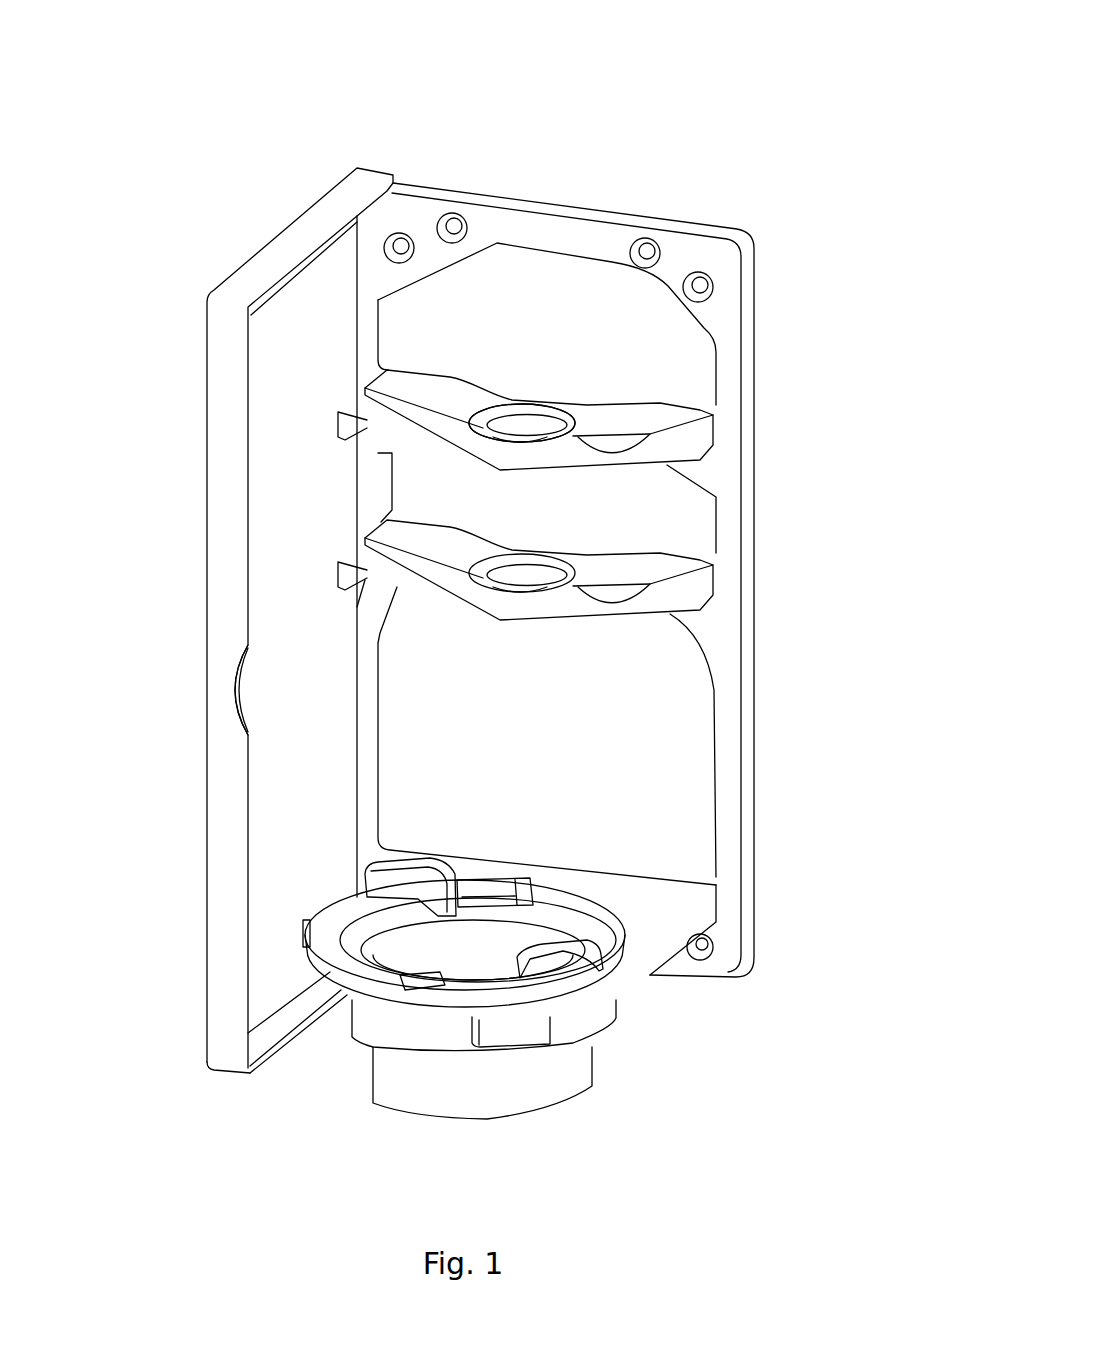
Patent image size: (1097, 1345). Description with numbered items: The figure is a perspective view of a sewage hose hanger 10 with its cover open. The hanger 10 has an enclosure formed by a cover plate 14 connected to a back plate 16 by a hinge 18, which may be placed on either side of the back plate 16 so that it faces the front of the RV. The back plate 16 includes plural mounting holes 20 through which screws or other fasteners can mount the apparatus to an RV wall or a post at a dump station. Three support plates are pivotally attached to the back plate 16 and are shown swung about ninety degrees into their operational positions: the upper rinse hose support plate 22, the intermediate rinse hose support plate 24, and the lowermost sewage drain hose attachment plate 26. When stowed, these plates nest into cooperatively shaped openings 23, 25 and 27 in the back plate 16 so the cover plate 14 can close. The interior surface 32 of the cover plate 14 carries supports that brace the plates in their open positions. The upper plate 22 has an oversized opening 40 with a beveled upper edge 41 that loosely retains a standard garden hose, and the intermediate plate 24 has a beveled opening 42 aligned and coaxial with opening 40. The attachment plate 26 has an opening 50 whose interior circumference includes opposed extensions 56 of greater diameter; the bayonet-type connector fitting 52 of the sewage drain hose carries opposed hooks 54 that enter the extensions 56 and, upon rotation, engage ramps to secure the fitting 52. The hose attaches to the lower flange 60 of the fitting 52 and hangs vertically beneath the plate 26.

The sewage hose hanger 10 is at (499, 604).
The cover plate 14 is at (223, 604).
The back plate 16 is at (506, 506).
The hinge 18 is at (499, 540).
The mounting holes 20 is at (453, 222).
The upper rinse hose support plate 22 is at (479, 243).
The opening 23 is at (663, 347).
The intermediate rinse hose support plate 24 is at (477, 570).
The opening 25 is at (672, 510).
The sewage drain hose attachment plate 26 is at (648, 902).
The opening 27 is at (644, 735).
The interior surface 32 is at (305, 773).
The opening 40 is at (503, 425).
The beveled upper edge 41 is at (515, 412).
The opening 42 is at (515, 576).
The opening 50 is at (359, 927).
The connector fitting 52 is at (492, 976).
The hooks 54 is at (423, 872).
The extensions 56 is at (495, 880).
The lower flange 60 is at (493, 1093).